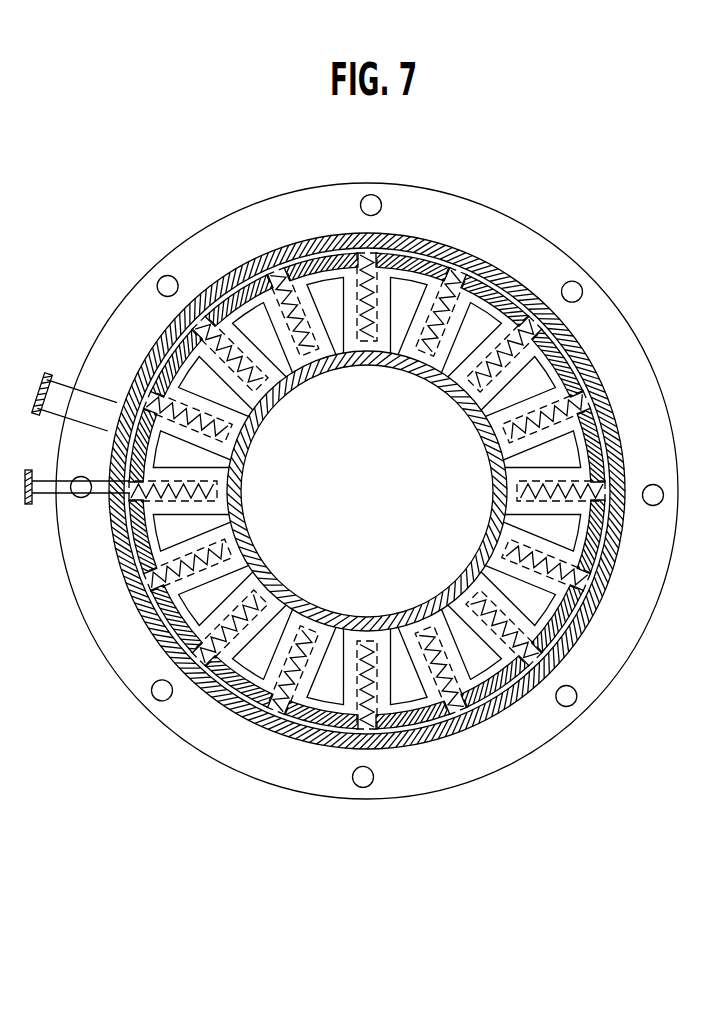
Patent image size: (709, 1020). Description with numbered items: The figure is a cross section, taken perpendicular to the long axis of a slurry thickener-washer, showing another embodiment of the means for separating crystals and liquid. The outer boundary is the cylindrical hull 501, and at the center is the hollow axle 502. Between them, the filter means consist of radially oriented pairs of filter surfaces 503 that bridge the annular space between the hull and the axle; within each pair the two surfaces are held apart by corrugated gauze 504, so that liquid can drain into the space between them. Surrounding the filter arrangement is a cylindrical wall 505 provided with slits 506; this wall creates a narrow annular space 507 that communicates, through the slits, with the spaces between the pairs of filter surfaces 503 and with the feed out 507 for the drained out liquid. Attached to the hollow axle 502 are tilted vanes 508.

The cylindrical hull 501 is at (130, 582).
The hollow axle 502 is at (230, 528).
The pairs of filter surfaces 503 is at (502, 622).
The corrugated gauze 504 is at (523, 653).
The cylindrical wall 505 is at (228, 683).
The slits 506 is at (555, 672).
The narrow annular space 507 is at (43, 488).
The tilted vanes 508 is at (475, 327).